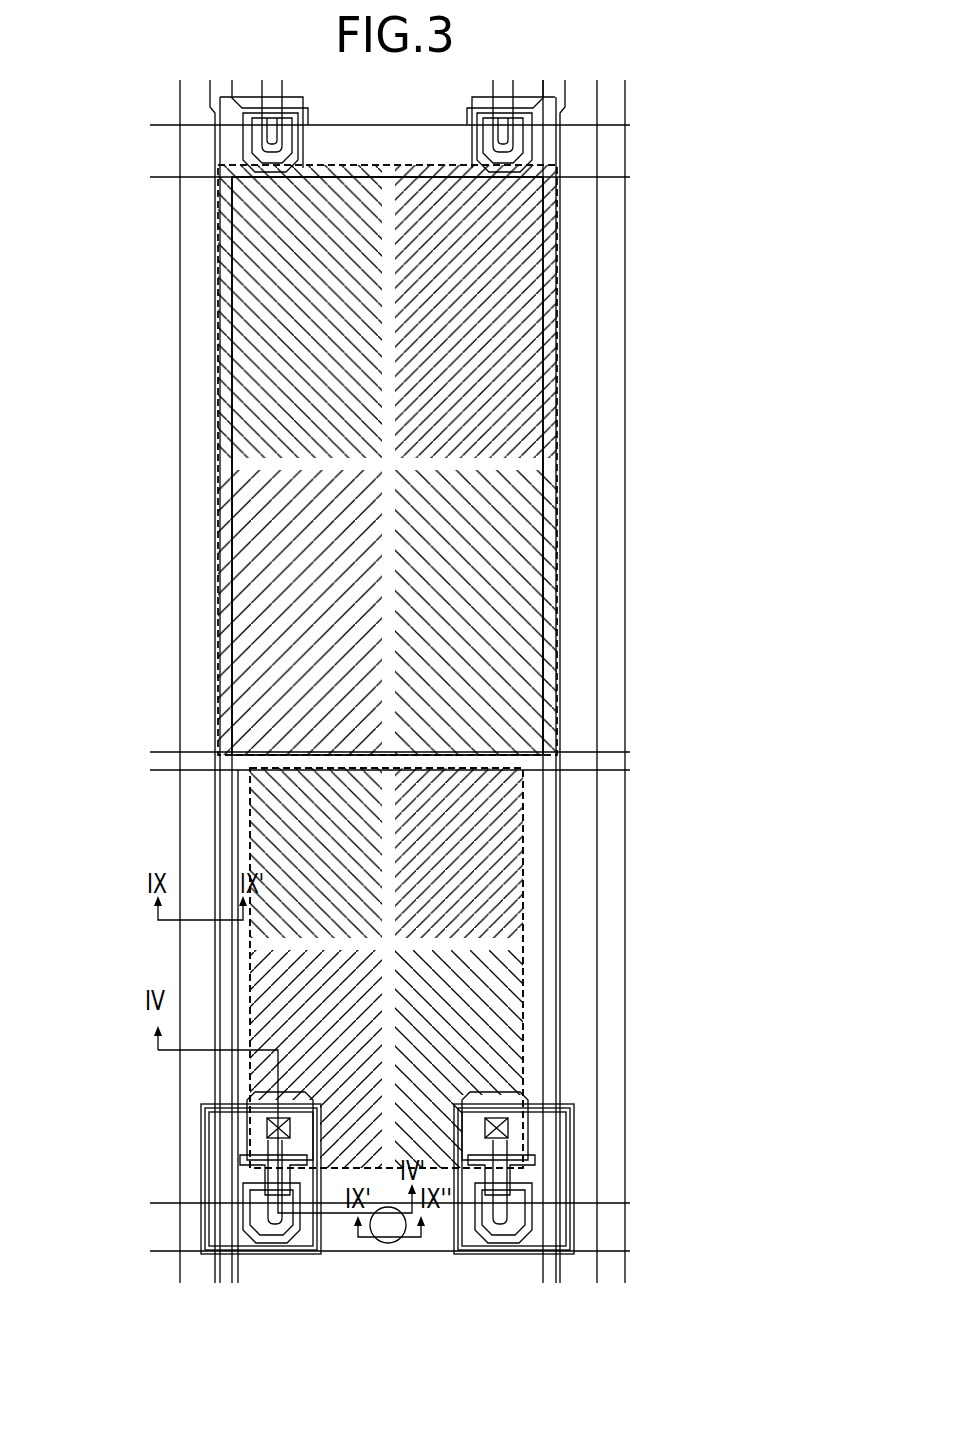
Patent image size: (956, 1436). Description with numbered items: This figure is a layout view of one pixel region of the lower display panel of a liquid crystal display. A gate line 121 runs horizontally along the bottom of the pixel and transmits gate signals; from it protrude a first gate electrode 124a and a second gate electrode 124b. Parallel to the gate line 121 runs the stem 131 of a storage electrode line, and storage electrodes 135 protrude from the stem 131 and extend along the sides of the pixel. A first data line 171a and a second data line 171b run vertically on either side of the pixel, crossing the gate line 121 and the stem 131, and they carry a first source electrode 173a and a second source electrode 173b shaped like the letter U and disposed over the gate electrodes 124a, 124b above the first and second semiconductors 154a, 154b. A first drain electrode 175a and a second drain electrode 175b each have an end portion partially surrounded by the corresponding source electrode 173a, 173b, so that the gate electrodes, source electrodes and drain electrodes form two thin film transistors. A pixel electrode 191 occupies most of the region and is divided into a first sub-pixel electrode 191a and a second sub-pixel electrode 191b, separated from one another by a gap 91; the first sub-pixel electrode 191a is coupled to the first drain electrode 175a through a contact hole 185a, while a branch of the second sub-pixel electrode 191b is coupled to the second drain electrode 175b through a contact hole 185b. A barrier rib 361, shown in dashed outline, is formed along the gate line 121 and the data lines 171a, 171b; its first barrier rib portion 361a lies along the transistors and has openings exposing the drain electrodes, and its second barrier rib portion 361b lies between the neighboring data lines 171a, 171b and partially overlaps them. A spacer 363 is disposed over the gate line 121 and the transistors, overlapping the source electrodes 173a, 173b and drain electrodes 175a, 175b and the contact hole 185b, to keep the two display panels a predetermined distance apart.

The gap 91 is at (245, 838).
The gate line 121 is at (600, 1203).
The first gate electrode 124a is at (463, 1195).
The second gate electrode 124b is at (312, 1187).
The stem of storage electrode line 131 is at (597, 752).
The storage electrode 135 is at (235, 795).
The first semiconductor 154a is at (520, 1250).
The second semiconductor 154b is at (253, 1250).
The first data line 171a is at (562, 955).
The second data line 171b is at (233, 970).
The first source electrode 173a is at (470, 1225).
The second source electrode 173b is at (305, 1215).
The first drain electrode 175a is at (520, 1175).
The second drain electrode 175b is at (245, 1088).
The first contact hole 185a is at (505, 1125).
The second contact hole 185b is at (265, 1128).
The pixel electrode 191 is at (745, 545).
The first sub-pixel electrode 191a is at (513, 850).
The second sub-pixel electrode 191b is at (540, 438).
The barrier rib 361 is at (745, 270).
The first barrier rib portion 361a is at (320, 1173).
The second barrier rib portion 361b is at (222, 262).
The spacer 363 is at (208, 1200).